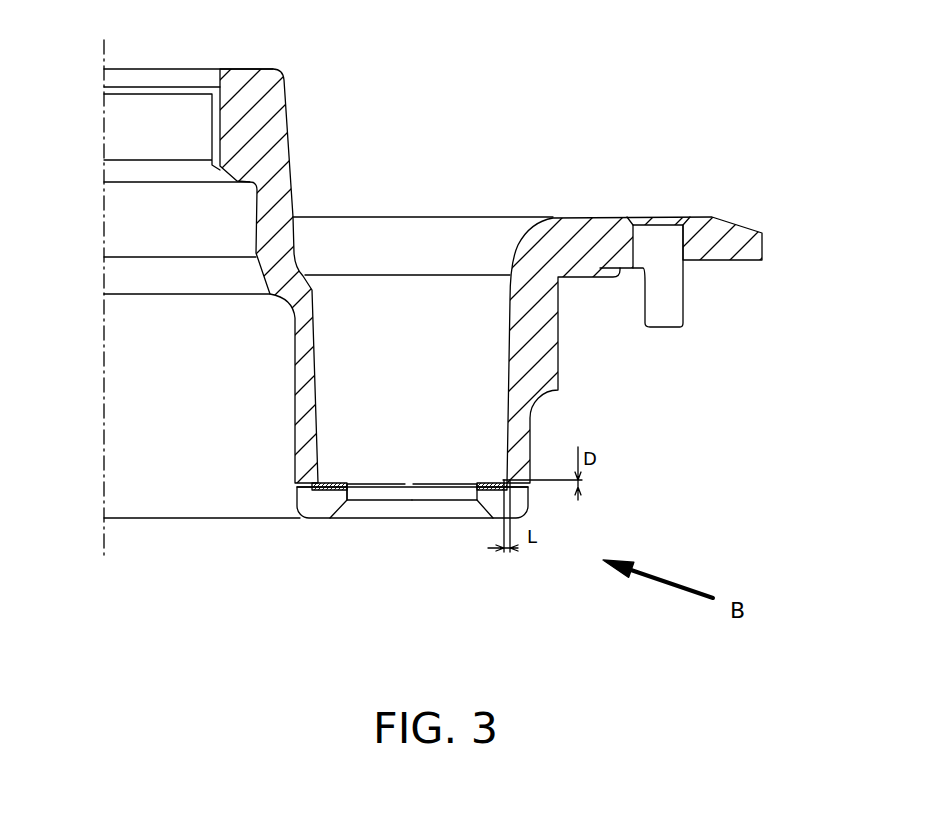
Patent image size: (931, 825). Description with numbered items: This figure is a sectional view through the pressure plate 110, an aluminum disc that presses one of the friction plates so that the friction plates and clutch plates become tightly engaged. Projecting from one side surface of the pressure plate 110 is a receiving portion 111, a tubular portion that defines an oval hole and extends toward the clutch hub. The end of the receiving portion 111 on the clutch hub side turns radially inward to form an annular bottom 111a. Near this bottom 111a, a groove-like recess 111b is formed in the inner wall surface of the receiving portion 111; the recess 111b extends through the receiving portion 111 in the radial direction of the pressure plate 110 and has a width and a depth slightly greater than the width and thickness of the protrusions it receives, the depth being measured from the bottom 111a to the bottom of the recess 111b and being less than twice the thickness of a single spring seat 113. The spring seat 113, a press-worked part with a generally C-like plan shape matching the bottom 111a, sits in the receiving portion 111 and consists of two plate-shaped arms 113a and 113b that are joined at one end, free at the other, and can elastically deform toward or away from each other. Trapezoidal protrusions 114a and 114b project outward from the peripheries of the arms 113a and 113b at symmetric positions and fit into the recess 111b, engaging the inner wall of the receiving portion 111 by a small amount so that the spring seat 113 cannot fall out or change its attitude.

The pressure plate 110 is at (283, 63).
The receiving portion 111 is at (510, 340).
The bottom 111a is at (485, 483).
The recess 111b is at (582, 486).
The spring seat 113 is at (443, 548).
The arm 113a is at (442, 487).
The arm 113b is at (379, 487).
The protrusion 114a is at (527, 490).
The protrusion 114b is at (295, 518).